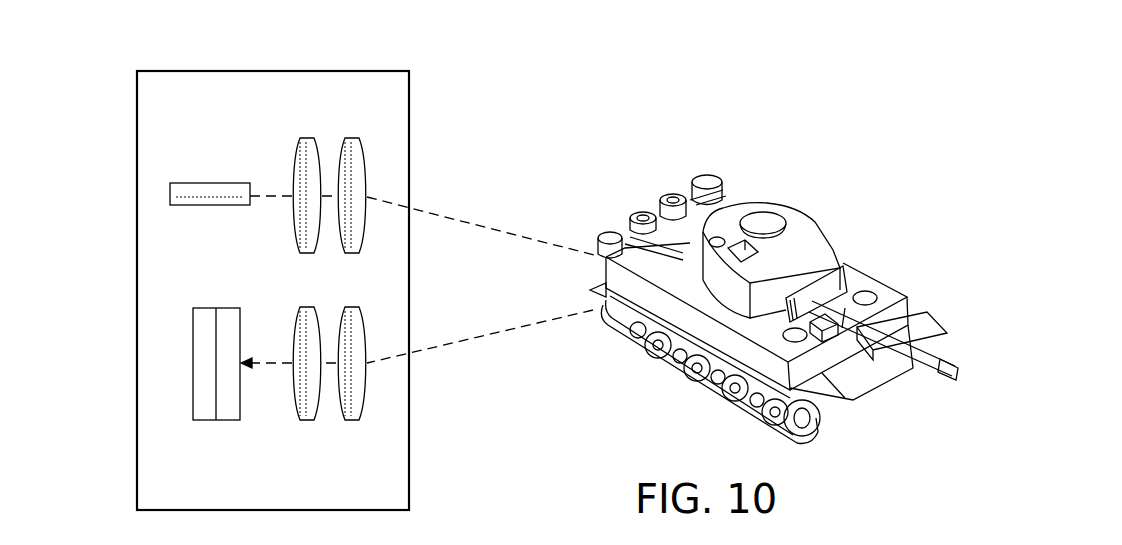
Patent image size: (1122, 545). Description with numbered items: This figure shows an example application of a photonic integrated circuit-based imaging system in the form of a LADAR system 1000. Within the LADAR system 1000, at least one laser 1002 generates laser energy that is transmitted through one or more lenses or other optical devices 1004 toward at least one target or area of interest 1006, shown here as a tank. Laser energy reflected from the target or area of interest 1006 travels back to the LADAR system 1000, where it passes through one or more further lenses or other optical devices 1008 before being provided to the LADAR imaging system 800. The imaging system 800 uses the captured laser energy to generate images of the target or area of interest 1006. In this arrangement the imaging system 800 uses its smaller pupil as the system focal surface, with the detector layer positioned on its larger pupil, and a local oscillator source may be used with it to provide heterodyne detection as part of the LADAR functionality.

The LADAR system 1000 is at (136, 226).
The laser 1002 is at (212, 182).
The lenses or other optical devices 1004 is at (285, 128).
The target or area of interest 1006 is at (797, 215).
The lenses or other optical devices 1008 is at (285, 426).
The LADAR imaging system 800 is at (208, 421).